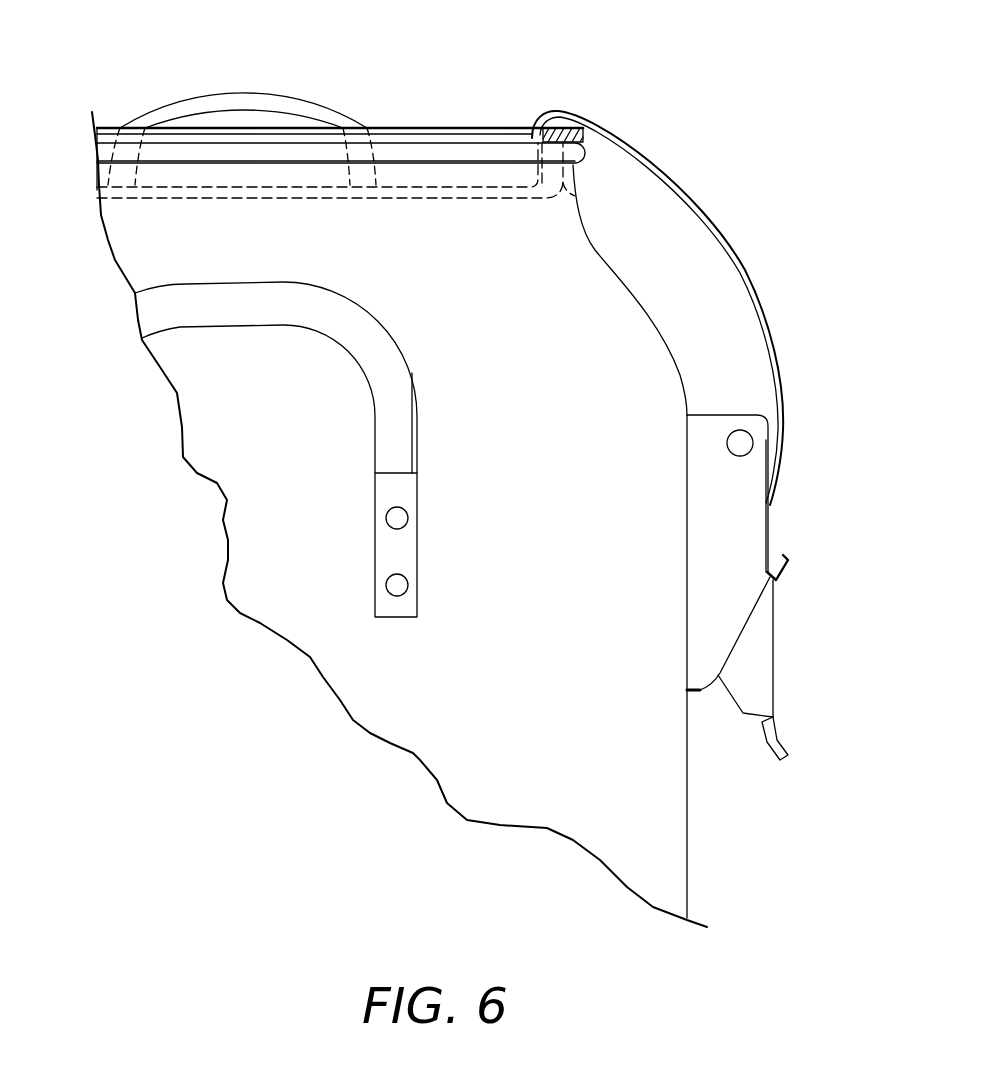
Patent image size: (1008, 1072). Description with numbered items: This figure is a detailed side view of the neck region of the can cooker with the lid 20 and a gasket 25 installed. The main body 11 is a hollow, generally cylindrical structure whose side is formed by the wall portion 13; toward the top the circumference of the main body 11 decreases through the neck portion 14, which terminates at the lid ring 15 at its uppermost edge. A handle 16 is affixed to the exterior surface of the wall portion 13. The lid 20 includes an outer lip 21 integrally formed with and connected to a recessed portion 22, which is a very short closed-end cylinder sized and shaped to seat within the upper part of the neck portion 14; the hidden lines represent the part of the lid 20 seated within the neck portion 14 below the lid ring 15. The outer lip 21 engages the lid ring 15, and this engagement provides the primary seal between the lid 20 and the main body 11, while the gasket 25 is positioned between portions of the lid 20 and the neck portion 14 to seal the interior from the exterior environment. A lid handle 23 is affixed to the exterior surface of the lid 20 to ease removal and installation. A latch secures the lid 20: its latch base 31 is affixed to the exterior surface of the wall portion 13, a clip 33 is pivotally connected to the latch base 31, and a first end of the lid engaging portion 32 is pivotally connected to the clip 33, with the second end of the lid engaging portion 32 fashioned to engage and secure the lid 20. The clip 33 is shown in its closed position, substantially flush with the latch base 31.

The main body 11 is at (740, 877).
The wall portion 13 is at (690, 788).
The neck portion 14 is at (637, 293).
The lid ring 15 is at (408, 152).
The handle 16 is at (418, 374).
The lid 20 is at (447, 66).
The outer lip 21 is at (562, 127).
The recessed portion 22 is at (465, 190).
The lid handle 23 is at (216, 93).
The gasket 25 is at (560, 190).
The latch base 31 is at (717, 553).
The lid engaging portion 32 is at (657, 160).
The clip 33 is at (753, 662).